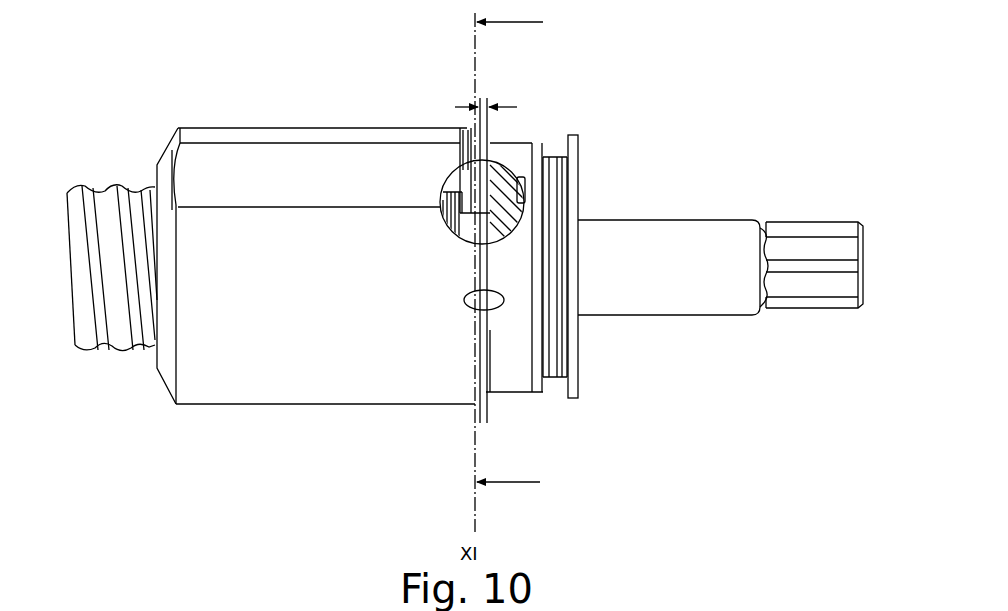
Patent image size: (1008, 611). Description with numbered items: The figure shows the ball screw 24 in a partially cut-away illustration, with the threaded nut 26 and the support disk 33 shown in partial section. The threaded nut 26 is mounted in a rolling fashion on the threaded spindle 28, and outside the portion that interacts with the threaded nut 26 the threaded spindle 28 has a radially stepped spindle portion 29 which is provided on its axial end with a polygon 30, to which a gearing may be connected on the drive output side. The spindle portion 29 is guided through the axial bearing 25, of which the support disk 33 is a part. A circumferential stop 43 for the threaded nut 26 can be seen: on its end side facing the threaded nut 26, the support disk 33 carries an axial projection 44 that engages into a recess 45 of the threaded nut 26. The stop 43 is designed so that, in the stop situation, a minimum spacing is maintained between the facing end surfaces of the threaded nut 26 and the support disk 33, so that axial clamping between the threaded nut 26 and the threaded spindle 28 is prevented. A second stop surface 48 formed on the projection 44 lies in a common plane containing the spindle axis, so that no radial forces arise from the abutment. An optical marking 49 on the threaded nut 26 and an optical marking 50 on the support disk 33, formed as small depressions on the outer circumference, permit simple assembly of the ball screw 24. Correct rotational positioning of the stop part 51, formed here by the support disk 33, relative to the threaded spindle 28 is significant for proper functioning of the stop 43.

The ball screw 24 is at (186, 90).
The axial bearing 25 is at (553, 386).
The threaded nut 26 is at (278, 162).
The threaded spindle 28 is at (118, 215).
The spindle portion 29 is at (690, 245).
The polygon 30 is at (808, 247).
The support disk 33 is at (498, 378).
The circumferential stop 43 is at (458, 175).
The axial projection 44 is at (510, 175).
The recess 45 is at (512, 178).
The second stop surface 48 is at (500, 212).
The optical marking 49 is at (463, 305).
The optical marking 50 is at (504, 310).
The stop part 51 is at (506, 272).